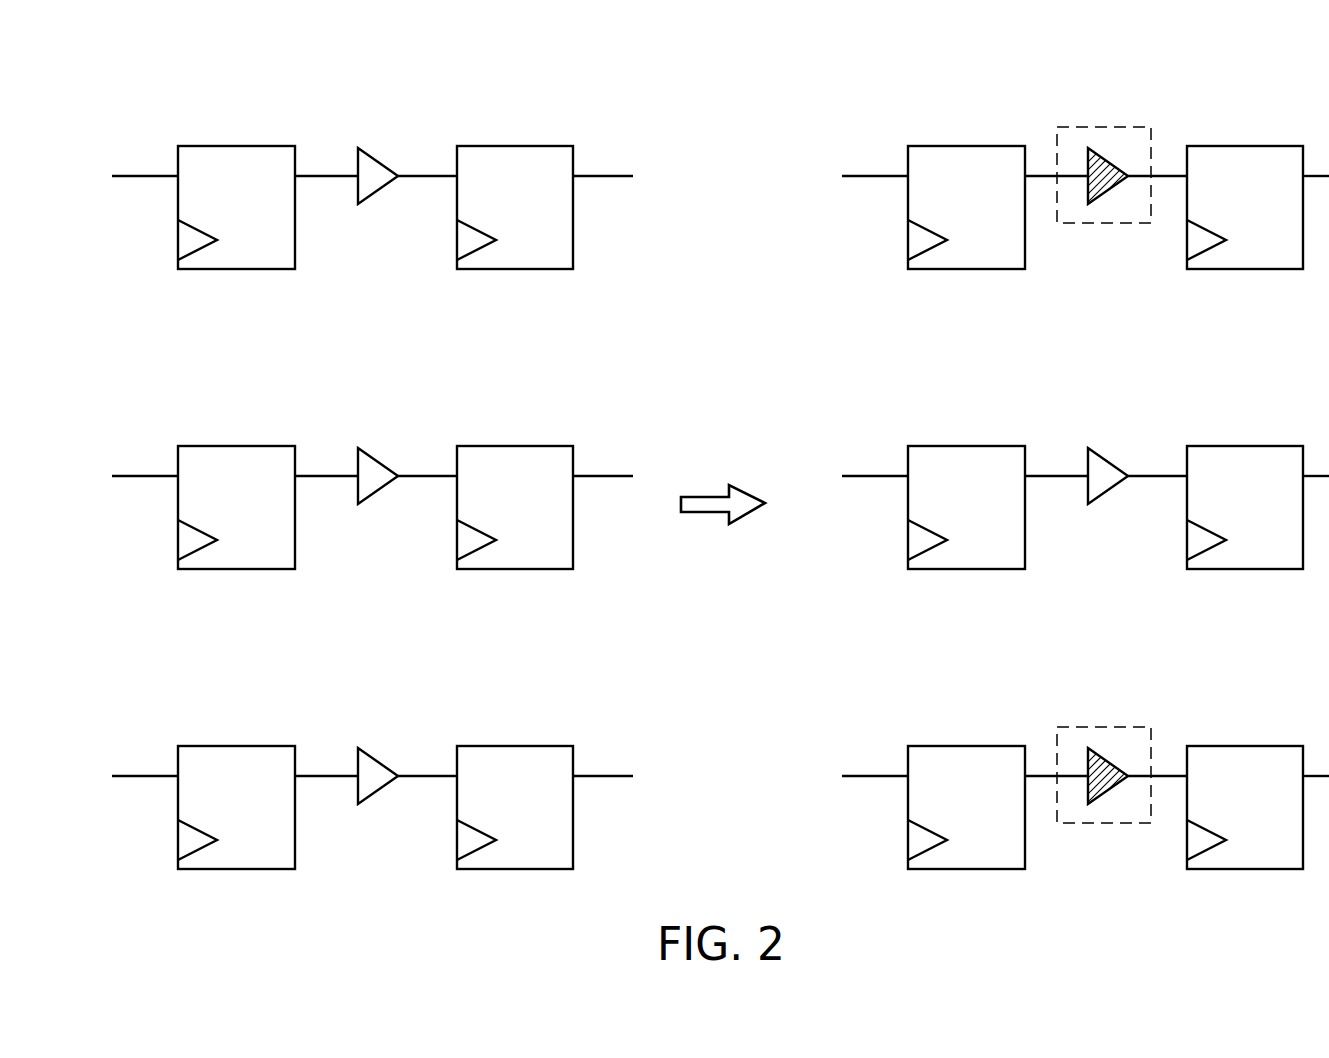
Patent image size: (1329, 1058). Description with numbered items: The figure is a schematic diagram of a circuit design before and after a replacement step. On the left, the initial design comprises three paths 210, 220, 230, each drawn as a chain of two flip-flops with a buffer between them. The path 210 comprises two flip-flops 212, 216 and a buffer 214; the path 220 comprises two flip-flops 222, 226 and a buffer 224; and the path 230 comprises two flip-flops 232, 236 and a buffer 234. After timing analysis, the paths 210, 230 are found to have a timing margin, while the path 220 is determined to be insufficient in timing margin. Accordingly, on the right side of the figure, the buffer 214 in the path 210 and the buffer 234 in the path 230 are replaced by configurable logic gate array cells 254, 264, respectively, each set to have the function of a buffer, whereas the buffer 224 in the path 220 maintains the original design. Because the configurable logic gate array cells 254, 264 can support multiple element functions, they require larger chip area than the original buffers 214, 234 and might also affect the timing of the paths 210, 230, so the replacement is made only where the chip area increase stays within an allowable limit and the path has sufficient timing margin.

The path 210 is at (187, 112).
The flip-flop 212 is at (237, 146).
The buffer 214 is at (380, 150).
The flip-flop 216 is at (517, 146).
The path 220 is at (187, 412).
The flip-flop 222 is at (237, 446).
The buffer 224 is at (380, 450).
The flip-flop 226 is at (517, 446).
The path 230 is at (187, 712).
The flip-flop 232 is at (237, 746).
The buffer 234 is at (380, 750).
The flip-flop 236 is at (517, 746).
The configurable logic gate array cell 254 is at (1110, 127).
The configurable logic gate array cell 264 is at (1110, 727).